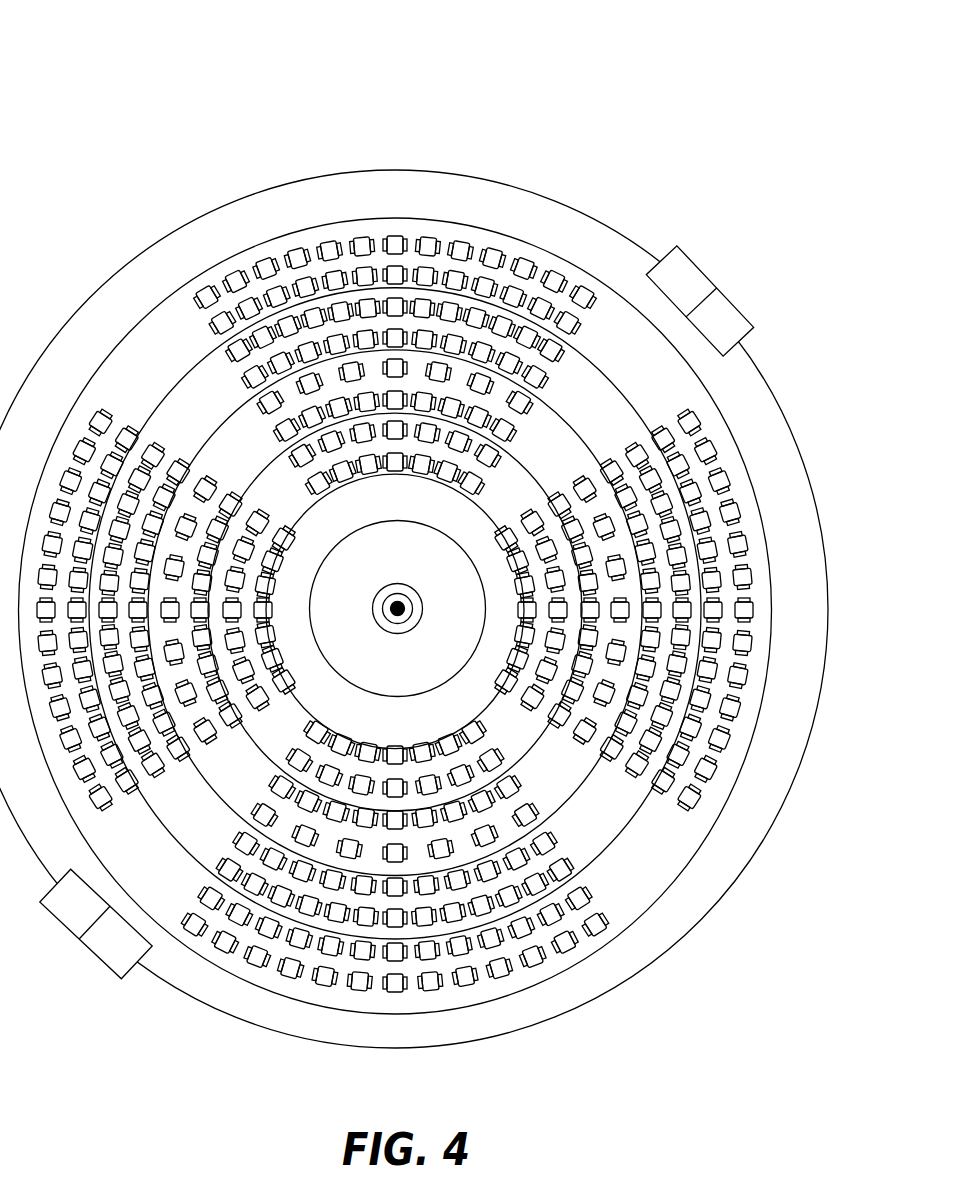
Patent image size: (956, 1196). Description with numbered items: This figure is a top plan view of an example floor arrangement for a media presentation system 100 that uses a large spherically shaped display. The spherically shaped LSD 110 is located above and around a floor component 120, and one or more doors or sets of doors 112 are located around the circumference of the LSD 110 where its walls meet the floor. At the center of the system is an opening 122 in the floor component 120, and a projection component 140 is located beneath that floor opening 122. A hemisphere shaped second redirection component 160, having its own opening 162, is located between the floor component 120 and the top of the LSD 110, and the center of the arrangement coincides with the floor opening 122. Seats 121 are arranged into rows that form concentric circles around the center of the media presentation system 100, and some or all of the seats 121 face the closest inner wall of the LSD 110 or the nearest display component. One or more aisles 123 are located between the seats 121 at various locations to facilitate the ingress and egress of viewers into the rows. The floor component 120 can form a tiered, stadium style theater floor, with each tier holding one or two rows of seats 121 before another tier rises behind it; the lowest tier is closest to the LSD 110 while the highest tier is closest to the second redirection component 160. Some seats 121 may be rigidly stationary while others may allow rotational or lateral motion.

The media presentation system 100 is at (188, 77).
The LSD 110 is at (540, 194).
The doors 112 is at (694, 266).
The floor component 120 is at (619, 824).
The seats 121 is at (688, 804).
The opening 122 is at (388, 622).
The aisles 123 is at (151, 349).
The projection component 140 is at (383, 613).
The second redirection component 160 is at (333, 548).
The opening 162 is at (398, 583).